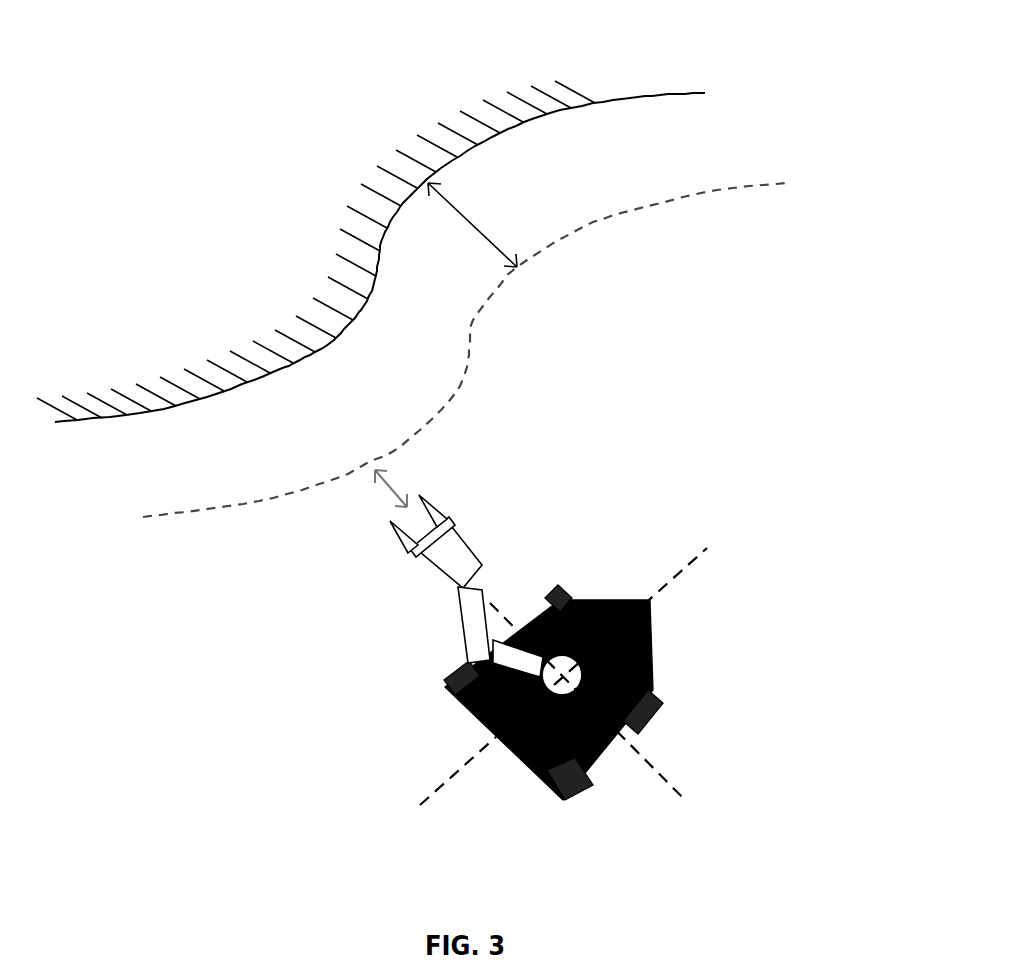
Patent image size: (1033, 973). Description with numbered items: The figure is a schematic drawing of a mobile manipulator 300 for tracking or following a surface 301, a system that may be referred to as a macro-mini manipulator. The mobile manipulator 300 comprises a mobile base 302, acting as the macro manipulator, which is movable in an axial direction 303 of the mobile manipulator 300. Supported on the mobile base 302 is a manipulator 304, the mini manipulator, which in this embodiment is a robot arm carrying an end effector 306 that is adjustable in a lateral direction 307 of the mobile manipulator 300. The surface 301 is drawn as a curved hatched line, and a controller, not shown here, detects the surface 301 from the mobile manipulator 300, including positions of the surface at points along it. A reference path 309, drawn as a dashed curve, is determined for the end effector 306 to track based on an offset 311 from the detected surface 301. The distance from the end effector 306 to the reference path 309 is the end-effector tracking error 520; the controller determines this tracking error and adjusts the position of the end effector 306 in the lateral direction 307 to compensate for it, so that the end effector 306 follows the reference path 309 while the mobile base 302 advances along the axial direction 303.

The mobile manipulator 300 is at (571, 665).
The surface 301 is at (118, 418).
The mobile base 302 is at (633, 693).
The axial direction 303 is at (680, 582).
The manipulator 304 is at (453, 600).
The end effector 306 is at (393, 538).
The lateral direction 307 is at (680, 793).
The reference path 309 is at (190, 517).
The offset 311 is at (482, 221).
The end-effector tracking error 520 is at (472, 431).